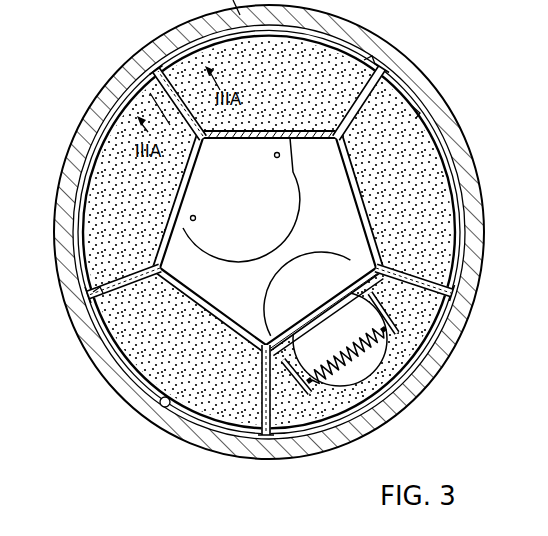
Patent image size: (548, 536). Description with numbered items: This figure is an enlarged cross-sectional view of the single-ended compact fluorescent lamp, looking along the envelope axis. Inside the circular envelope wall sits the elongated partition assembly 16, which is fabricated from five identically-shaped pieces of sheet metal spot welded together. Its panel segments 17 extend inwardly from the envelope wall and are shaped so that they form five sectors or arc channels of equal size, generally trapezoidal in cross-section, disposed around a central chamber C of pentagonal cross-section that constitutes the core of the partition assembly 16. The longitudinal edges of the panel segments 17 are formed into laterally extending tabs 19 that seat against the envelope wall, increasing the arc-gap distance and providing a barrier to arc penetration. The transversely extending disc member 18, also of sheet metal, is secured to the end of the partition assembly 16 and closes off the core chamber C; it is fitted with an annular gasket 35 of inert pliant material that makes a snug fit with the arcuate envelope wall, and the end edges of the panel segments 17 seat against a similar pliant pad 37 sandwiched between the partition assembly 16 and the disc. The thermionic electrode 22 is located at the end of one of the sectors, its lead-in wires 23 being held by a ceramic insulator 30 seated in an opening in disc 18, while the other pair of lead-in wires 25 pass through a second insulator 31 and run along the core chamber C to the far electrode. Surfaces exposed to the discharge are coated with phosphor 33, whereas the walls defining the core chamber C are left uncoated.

The partition assembly 16 is at (197, 318).
The panel segments 17 is at (404, 276).
The disc member 18 is at (343, 403).
The tabs 19 is at (160, 82).
The thermionic electrode 22 is at (412, 393).
The lead-in wires 23 is at (312, 335).
The lead-in wires 25 is at (277, 158).
The insulator 30 is at (341, 262).
The second insulator 31 is at (215, 203).
The phosphor 33 is at (150, 93).
The annular gasket 35 is at (160, 406).
The pad 37 is at (360, 66).
The central chamber C is at (324, 190).